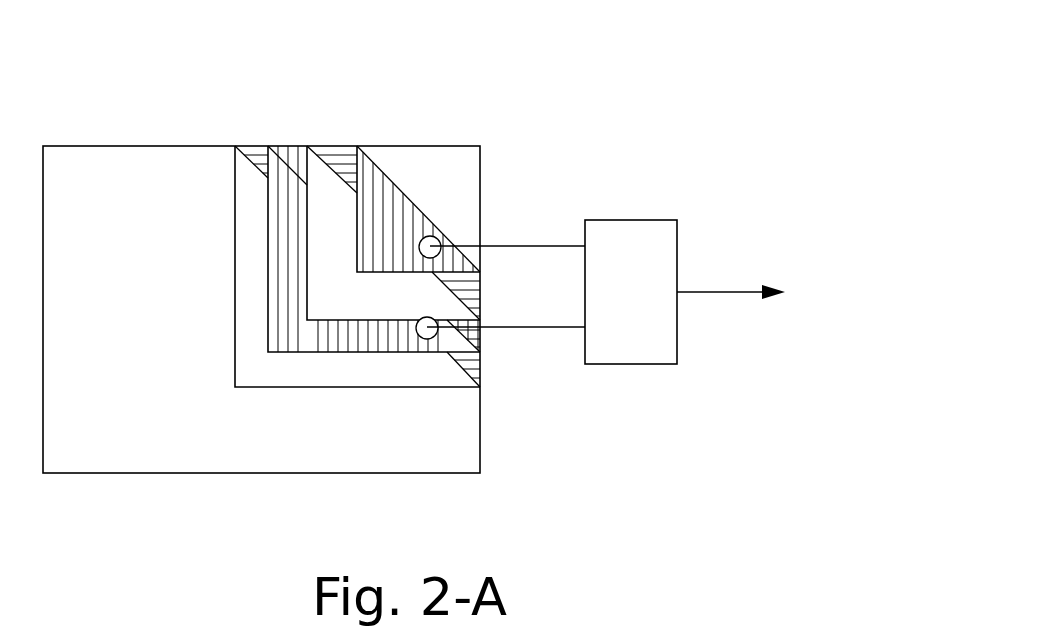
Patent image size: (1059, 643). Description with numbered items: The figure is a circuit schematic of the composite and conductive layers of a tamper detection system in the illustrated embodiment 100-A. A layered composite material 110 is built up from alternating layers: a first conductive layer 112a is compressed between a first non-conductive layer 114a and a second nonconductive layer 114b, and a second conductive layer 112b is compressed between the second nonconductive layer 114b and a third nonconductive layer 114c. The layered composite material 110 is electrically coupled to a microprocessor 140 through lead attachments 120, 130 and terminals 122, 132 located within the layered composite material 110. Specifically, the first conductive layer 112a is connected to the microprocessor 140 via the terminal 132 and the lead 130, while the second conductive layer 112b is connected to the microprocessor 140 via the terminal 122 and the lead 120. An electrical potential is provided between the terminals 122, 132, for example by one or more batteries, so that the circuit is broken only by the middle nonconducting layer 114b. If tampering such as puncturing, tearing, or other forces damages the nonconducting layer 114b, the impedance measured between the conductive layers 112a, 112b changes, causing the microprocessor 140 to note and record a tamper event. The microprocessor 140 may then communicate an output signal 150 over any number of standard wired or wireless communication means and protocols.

The illustrated embodiment 100-A is at (568, 60).
The layered composite material 110 is at (108, 147).
The first conductive layer 112a is at (281, 166).
The second conductive layer 112b is at (392, 180).
The first non-conductive layer 114a is at (178, 162).
The second nonconductive layer 114b is at (318, 173).
The third nonconductive layer 114c is at (423, 173).
The lead attachment 120 is at (527, 245).
The terminal 122 is at (438, 230).
The lead attachment 130 is at (523, 328).
The terminal 132 is at (427, 339).
The microprocessor 140 is at (648, 365).
The output signal 150 is at (728, 293).